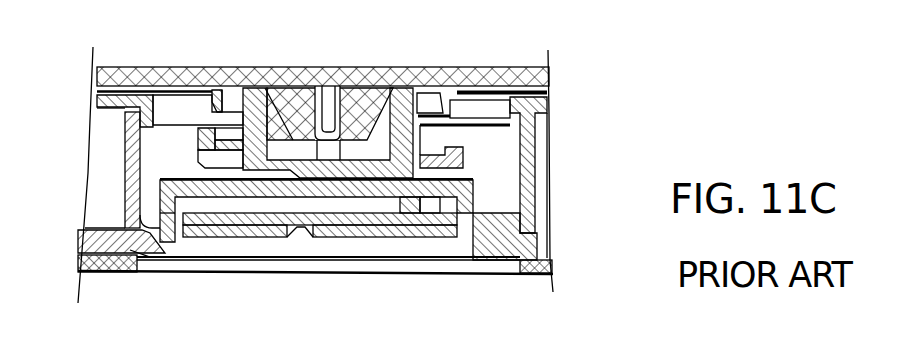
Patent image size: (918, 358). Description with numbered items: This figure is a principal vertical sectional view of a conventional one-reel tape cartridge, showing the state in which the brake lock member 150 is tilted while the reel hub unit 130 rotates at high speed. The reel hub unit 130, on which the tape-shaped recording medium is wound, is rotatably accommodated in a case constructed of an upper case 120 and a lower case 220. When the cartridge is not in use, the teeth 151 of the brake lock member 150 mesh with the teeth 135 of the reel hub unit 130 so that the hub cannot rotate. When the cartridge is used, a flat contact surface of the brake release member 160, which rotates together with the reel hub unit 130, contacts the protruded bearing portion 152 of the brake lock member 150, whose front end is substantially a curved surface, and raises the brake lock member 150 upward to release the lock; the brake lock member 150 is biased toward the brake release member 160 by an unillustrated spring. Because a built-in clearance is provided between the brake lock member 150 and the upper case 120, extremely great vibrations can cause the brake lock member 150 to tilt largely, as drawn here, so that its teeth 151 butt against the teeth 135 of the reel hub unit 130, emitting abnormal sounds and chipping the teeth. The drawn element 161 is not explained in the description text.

The upper case 120 is at (482, 68).
The reel hub unit 130 is at (545, 141).
The teeth of the reel hub unit 135 is at (457, 192).
The brake lock member 150 is at (540, 118).
The teeth of the brake lock member 151 is at (453, 172).
The bearing portion 152 is at (315, 172).
The brake release member 160 is at (170, 242).
The lower plate 161 is at (350, 172).
The lower case 220 is at (548, 262).